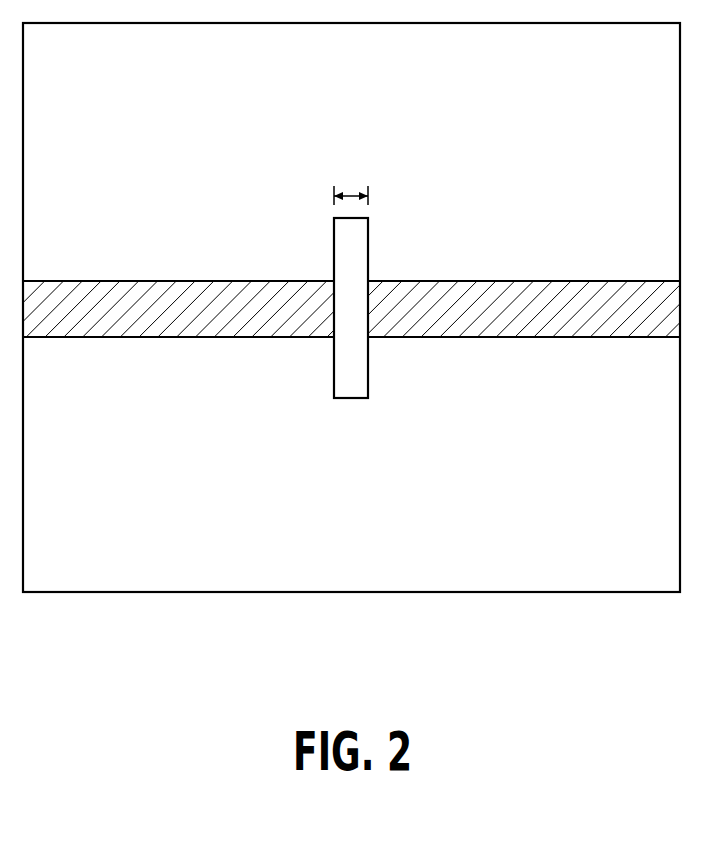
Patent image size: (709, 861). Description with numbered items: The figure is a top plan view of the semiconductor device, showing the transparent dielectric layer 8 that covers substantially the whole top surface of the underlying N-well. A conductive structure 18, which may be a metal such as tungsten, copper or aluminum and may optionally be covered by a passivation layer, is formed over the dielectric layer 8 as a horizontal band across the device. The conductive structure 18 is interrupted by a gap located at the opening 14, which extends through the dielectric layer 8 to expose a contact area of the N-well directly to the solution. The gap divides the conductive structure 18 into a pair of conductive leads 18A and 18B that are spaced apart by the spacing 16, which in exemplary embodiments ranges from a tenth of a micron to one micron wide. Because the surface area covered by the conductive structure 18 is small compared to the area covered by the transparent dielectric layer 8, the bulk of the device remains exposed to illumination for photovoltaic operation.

The dielectric layer 8 is at (280, 137).
The opening 14 is at (359, 385).
The spacing 16 is at (351, 196).
The conductive structure 18 is at (467, 288).
The conductive lead 18A is at (112, 328).
The conductive lead 18B is at (523, 328).